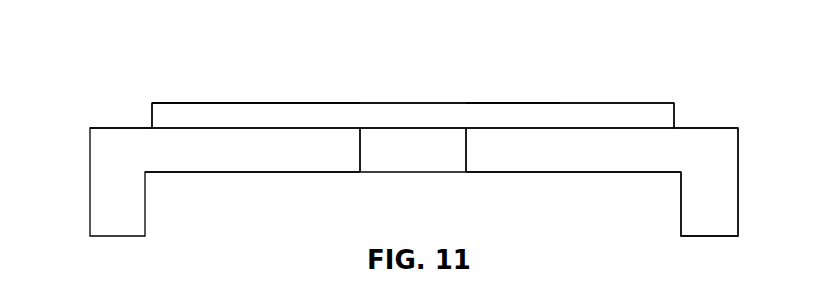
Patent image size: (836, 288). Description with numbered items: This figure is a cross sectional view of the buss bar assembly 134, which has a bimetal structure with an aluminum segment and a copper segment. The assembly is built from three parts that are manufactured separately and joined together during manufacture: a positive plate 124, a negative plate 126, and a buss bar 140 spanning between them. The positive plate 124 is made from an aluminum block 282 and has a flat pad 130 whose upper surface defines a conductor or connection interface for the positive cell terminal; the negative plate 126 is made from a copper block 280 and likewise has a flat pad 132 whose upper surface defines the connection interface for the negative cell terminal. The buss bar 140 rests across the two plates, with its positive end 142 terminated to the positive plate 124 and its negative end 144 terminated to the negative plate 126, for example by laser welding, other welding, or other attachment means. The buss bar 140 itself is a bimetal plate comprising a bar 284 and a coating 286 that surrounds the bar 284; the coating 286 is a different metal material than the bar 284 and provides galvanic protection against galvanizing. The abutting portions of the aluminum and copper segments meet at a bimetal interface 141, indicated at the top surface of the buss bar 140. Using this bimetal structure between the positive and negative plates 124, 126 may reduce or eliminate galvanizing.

The plate 124 is at (103, 179).
The plate 126 is at (723, 179).
The flat pad 130 is at (103, 128).
The flat pad 132 is at (713, 128).
The buss bar assembly 134 is at (636, 86).
The buss bar 140 is at (425, 110).
The bimetal interface 141 is at (511, 103).
The positive end 142 is at (173, 112).
The negative end 144 is at (617, 110).
The copper block 280 is at (584, 162).
The aluminum block 282 is at (230, 157).
The bar 284 is at (364, 115).
The coating 286 is at (315, 103).